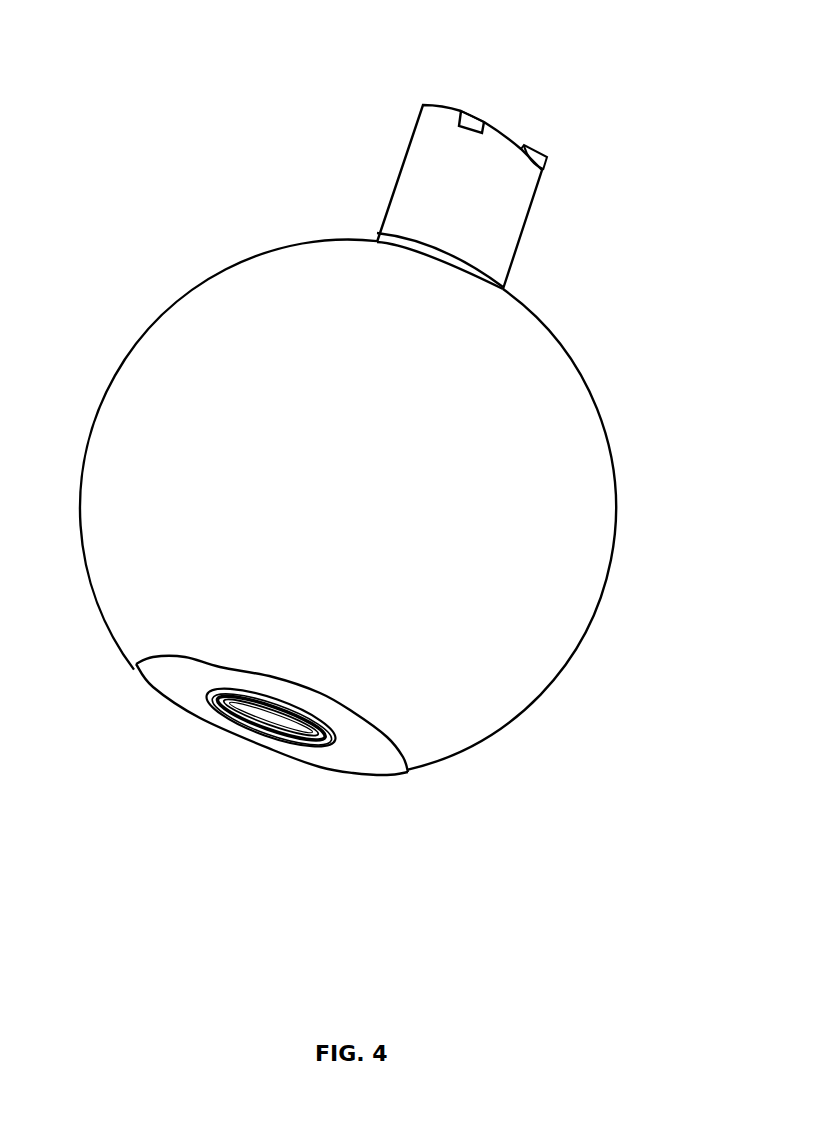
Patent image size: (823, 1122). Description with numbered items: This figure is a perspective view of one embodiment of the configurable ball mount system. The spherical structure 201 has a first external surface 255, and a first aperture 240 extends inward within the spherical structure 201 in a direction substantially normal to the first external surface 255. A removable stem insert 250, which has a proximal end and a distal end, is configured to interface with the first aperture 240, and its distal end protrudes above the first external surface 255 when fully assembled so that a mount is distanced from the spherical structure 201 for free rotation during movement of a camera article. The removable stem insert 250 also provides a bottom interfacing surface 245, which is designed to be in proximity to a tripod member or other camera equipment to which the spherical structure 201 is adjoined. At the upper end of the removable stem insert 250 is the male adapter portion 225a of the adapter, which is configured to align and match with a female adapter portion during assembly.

The spherical structure 201 is at (163, 67).
The male adapter portion 225a is at (543, 142).
The removable stem insert 250 is at (527, 236).
The first external surface 255 is at (532, 437).
The first aperture 240 is at (235, 727).
The bottom interfacing surface 245 is at (385, 757).